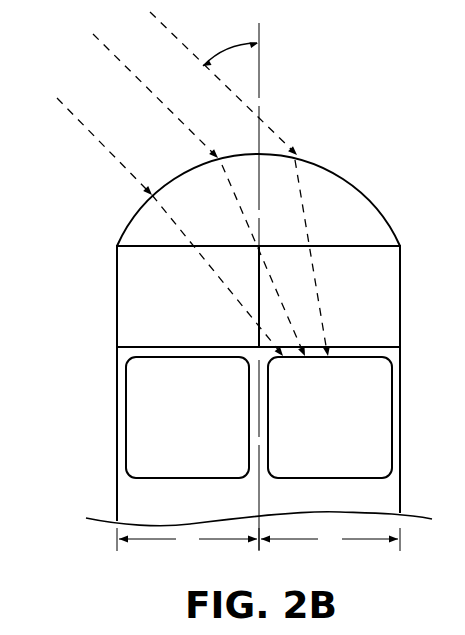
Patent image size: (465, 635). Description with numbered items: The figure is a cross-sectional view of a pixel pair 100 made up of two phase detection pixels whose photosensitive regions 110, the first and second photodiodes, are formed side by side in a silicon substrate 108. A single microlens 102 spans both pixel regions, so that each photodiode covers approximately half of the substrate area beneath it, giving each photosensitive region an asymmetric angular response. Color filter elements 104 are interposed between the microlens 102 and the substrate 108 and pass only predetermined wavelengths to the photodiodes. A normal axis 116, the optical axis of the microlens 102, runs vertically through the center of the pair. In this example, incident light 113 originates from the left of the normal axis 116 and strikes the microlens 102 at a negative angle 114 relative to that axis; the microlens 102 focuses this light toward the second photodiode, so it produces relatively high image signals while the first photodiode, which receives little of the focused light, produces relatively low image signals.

The pixel pair 100 is at (255, 276).
The microlens 102 is at (330, 185).
The color filter elements 104 is at (133, 287).
The silicon substrate 108 is at (128, 500).
The photosensitive regions 110 is at (143, 407).
The incident light 113 is at (122, 160).
The angle 114 is at (223, 47).
The normal axis 116 is at (260, 60).